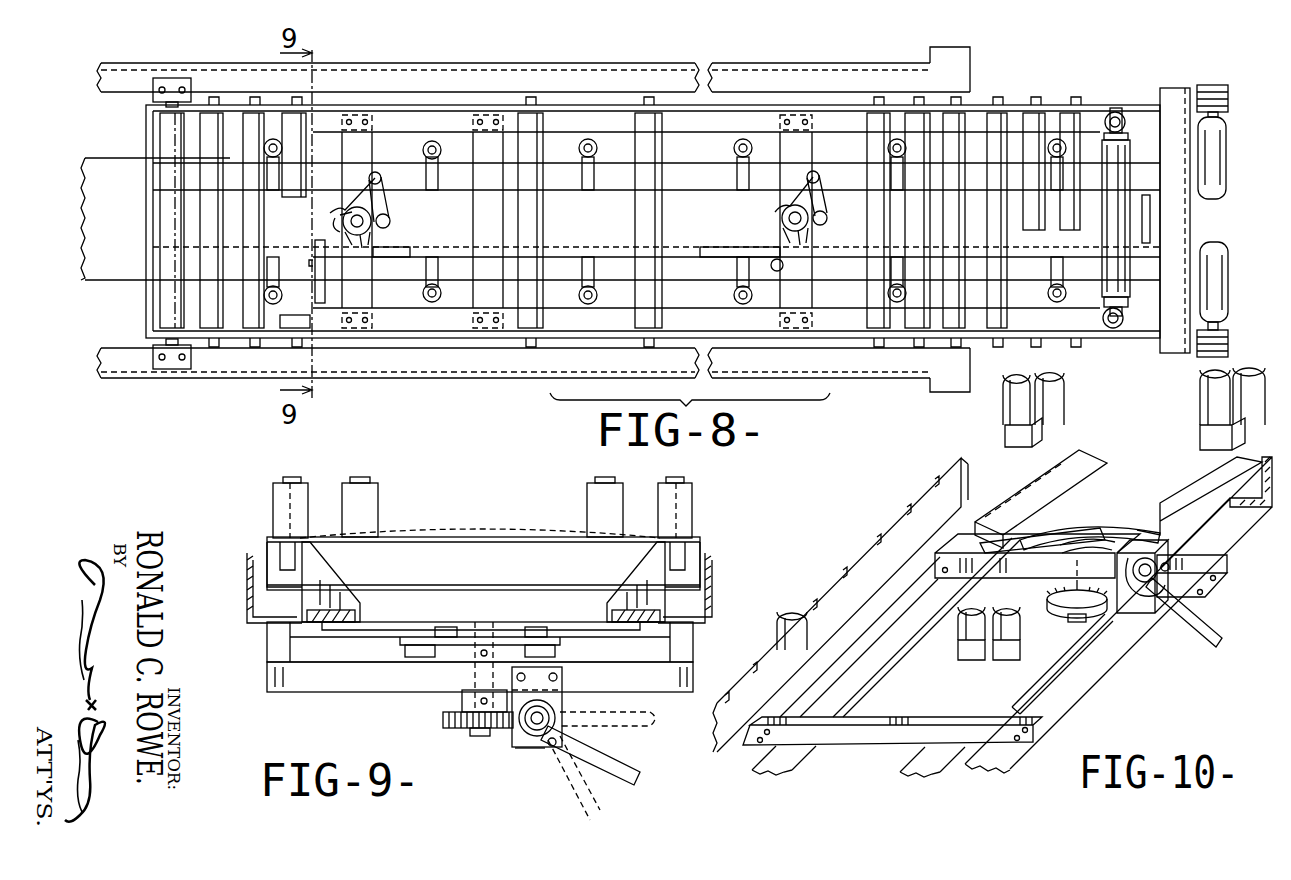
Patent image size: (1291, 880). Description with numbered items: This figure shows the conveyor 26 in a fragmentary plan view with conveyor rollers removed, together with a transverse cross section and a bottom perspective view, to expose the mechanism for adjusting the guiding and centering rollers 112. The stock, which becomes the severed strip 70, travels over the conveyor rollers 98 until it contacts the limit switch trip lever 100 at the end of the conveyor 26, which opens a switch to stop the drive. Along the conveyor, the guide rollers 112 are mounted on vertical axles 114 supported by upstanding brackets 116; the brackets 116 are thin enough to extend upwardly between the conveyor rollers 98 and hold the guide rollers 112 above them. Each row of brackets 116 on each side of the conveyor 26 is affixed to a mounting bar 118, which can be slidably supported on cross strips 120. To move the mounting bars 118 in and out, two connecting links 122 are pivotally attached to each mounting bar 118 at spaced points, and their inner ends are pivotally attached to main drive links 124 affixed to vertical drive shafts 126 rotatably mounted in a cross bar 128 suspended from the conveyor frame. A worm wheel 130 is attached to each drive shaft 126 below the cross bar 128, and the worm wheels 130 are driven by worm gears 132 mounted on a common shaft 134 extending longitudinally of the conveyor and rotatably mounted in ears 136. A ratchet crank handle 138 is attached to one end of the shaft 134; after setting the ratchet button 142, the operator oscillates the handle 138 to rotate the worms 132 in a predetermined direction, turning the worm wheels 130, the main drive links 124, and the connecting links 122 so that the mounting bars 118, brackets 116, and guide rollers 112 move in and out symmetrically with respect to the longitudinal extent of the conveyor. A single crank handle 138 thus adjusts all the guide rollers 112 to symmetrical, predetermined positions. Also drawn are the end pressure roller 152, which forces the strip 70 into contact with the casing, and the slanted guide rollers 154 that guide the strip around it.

In FIG. 8, the conveyor 26 is at (438, 52).
In FIG. 9, the conveyor 26 is at (247, 596).
In FIG. 10, the conveyor 26 is at (866, 530).
In FIG. 8, the severed strip 70 is at (106, 280).
In FIG. 9, the severed strip 70 is at (512, 538).
In FIG. 8, the conveyor rollers 98 is at (160, 202).
In FIG. 9, the conveyor rollers 98 is at (447, 538).
In FIG. 8, the limit switch trip lever 100 is at (1152, 208).
In FIG. 8, the guiding and centering rollers 112 is at (443, 148).
In FIG. 9, the guiding and centering rollers 112 is at (273, 512).
In FIG. 10, the guiding and centering rollers 112 is at (1003, 418).
In FIG. 8, the vertical axles 114 is at (423, 150).
In FIG. 8, the upstanding brackets 116 is at (438, 180).
In FIG. 9, the upstanding brackets 116 is at (340, 572).
In FIG. 10, the upstanding brackets 116 is at (1050, 458).
In FIG. 8, the mounting bar 118 is at (552, 252).
In FIG. 9, the mounting bar 118 is at (362, 615).
In FIG. 10, the mounting bar 118 is at (960, 676).
In FIG. 8, the cross strips 120 is at (480, 207).
In FIG. 9, the cross strips 120 is at (305, 642).
In FIG. 10, the cross strips 120 is at (822, 735).
In FIG. 8, the connecting links 122 is at (388, 200).
In FIG. 9, the connecting links 122 is at (481, 619).
In FIG. 10, the connecting links 122 is at (1000, 538).
In FIG. 8, the main drive links 124 is at (320, 208).
In FIG. 9, the main drive links 124 is at (503, 632).
In FIG. 10, the main drive links 124 is at (1070, 545).
In FIG. 8, the vertical drive shafts 126 is at (390, 236).
In FIG. 9, the vertical drive shafts 126 is at (470, 734).
In FIG. 10, the vertical drive shafts 126 is at (1072, 620).
In FIG. 8, the cross bar 128 is at (578, 221).
In FIG. 9, the cross bar 128 is at (347, 688).
In FIG. 10, the cross bar 128 is at (1210, 588).
In FIG. 8, the worm wheel 130 is at (790, 200).
In FIG. 9, the worm wheel 130 is at (440, 716).
In FIG. 10, the worm wheel 130 is at (1048, 595).
In FIG. 9, the worm gears 132 is at (528, 748).
In FIG. 10, the worm gears 132 is at (1122, 612).
In FIG. 8, the common shaft 134 is at (710, 250).
In FIG. 9, the common shaft 134 is at (556, 710).
In FIG. 10, the common shaft 134 is at (1040, 615).
In FIG. 9, the ears 136 is at (565, 678).
In FIG. 10, the ears 136 is at (1140, 610).
In FIG. 8, the ratchet crank handle 138 is at (320, 296).
In FIG. 9, the ratchet crank handle 138 is at (622, 765).
In FIG. 10, the ratchet crank handle 138 is at (1221, 648).
In FIG. 9, the ratchet button 142 is at (551, 748).
In FIG. 10, the ratchet button 142 is at (1183, 578).
In FIG. 8, the end pressure roller 152 is at (1145, 96).
In FIG. 8, the slanted guide rollers 154 is at (1232, 165).